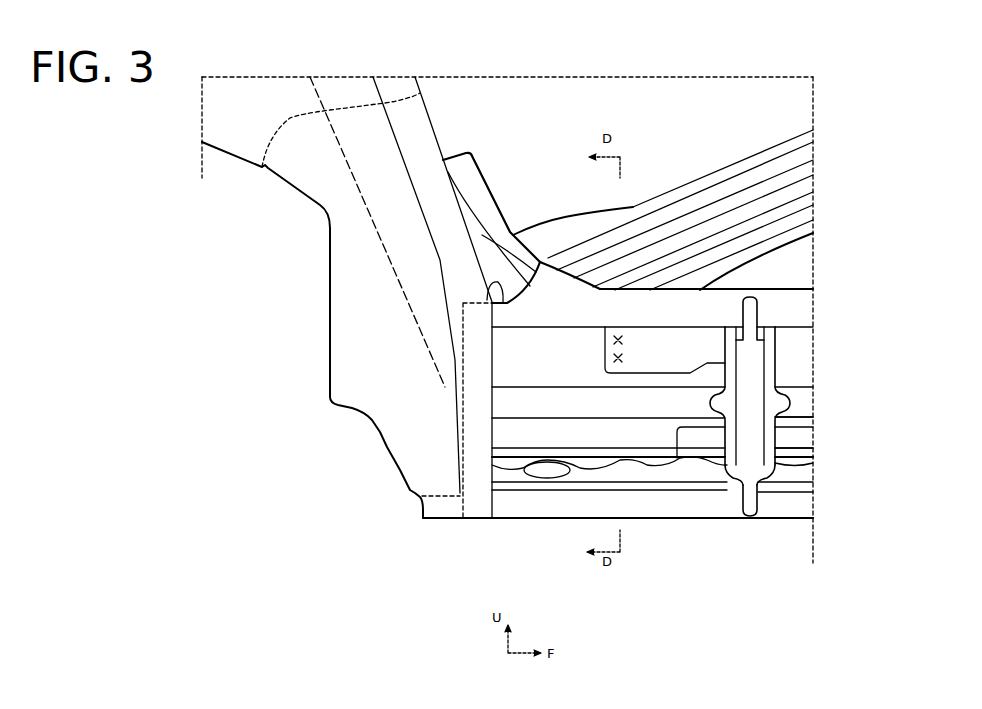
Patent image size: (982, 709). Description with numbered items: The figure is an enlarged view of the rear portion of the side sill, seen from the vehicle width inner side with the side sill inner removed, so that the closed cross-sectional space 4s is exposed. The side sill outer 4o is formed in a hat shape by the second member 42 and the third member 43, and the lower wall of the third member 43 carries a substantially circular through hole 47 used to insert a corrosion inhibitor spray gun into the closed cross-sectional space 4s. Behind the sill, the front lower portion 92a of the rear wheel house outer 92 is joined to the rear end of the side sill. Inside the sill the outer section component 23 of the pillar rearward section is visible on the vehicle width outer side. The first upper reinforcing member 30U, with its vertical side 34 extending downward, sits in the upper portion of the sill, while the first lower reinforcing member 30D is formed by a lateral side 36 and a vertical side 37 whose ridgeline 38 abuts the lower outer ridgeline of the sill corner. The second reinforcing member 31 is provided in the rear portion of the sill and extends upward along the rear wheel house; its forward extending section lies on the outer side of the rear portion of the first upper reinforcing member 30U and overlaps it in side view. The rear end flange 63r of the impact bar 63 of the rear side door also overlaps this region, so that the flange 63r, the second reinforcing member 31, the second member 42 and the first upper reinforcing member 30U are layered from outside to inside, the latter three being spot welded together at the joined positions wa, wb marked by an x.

The rear wheel house outer 92 is at (326, 313).
The front lower portion 92a is at (400, 432).
The side sill outer 4o is at (540, 523).
The closed cross-sectional space 4s is at (652, 409).
The second reinforcing member 31 is at (483, 182).
The impact bar 63 is at (700, 182).
The rear end flange 63r is at (546, 222).
The second member 42 is at (784, 280).
The vertical side 34 is at (605, 352).
The joined position wa is at (624, 340).
The joined position wb is at (624, 358).
The first upper reinforcing member 30U is at (793, 370).
The first lower reinforcing member 30D is at (700, 462).
The outer section component 23 is at (780, 463).
The vertical side 37 is at (673, 442).
The ridgeline 38 is at (810, 450).
The lateral side 36 is at (677, 460).
The through hole 47 is at (552, 470).
The third member 43 is at (778, 523).